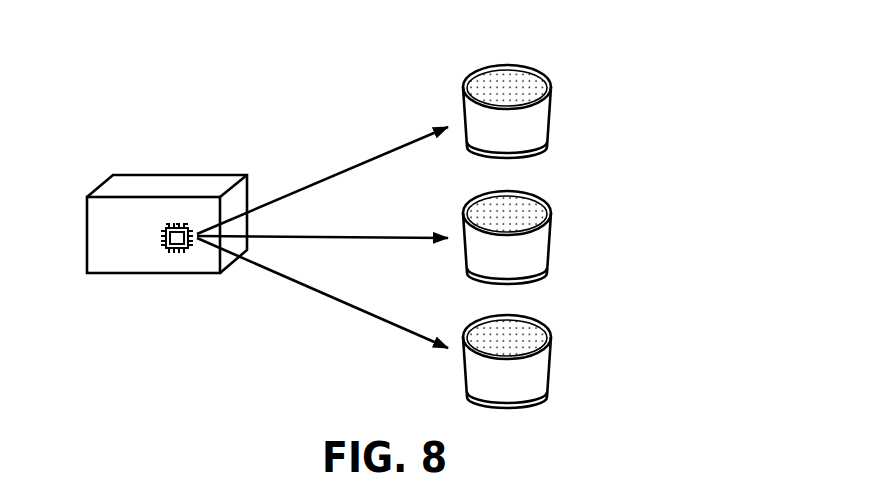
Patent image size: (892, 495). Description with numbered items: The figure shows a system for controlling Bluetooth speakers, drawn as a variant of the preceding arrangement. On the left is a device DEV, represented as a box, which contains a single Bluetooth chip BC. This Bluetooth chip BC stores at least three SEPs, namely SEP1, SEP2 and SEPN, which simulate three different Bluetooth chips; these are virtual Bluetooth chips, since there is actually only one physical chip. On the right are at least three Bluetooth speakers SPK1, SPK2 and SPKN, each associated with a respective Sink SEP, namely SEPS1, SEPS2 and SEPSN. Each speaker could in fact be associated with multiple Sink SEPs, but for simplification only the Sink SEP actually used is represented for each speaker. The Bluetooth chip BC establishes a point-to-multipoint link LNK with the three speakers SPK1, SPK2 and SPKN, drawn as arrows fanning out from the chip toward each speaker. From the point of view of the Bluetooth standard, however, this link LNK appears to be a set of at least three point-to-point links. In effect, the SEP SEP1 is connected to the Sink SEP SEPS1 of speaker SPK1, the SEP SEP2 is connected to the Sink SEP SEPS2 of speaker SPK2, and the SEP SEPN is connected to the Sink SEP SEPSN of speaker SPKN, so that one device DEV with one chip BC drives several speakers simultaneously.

The device DEV is at (125, 240).
The Bluetooth chip BC is at (175, 243).
The SEP SEP1 is at (163, 221).
The SEP SEP2 is at (177, 224).
The SEP SEPN is at (187, 223).
The point-to-multipoint link LNK is at (318, 187).
The Bluetooth speaker SPK1 is at (564, 114).
The Bluetooth speaker SPK2 is at (564, 237).
The Bluetooth speaker SPKN is at (564, 362).
The Sink SEP SEPS1 is at (564, 77).
The Sink SEP SEPS2 is at (564, 202).
The Sink SEP SEPSN is at (564, 325).